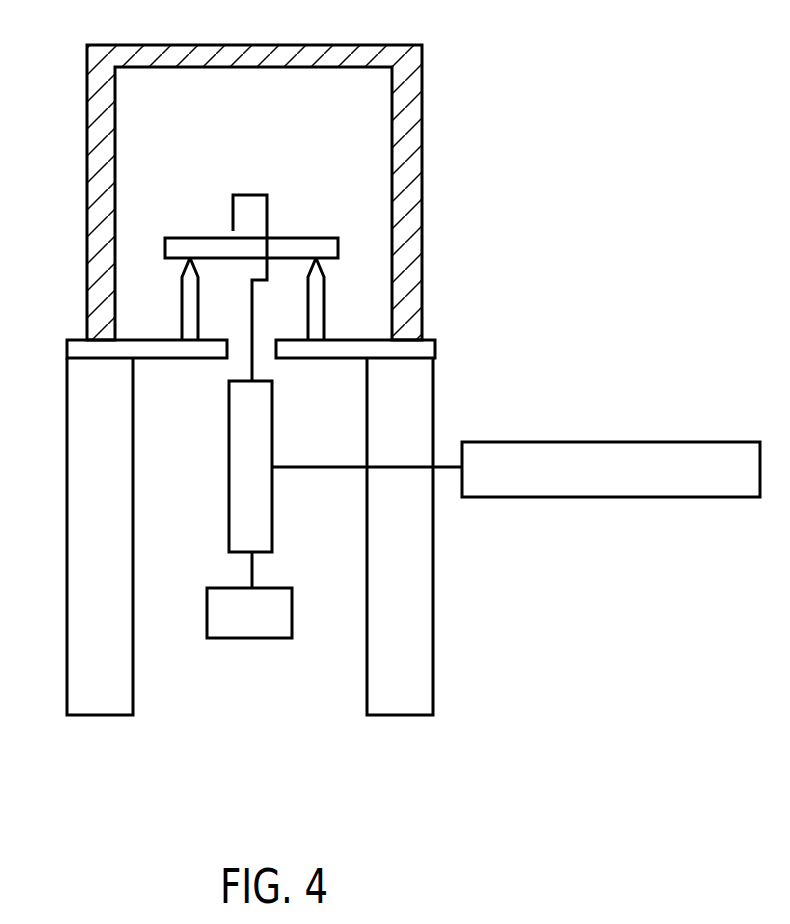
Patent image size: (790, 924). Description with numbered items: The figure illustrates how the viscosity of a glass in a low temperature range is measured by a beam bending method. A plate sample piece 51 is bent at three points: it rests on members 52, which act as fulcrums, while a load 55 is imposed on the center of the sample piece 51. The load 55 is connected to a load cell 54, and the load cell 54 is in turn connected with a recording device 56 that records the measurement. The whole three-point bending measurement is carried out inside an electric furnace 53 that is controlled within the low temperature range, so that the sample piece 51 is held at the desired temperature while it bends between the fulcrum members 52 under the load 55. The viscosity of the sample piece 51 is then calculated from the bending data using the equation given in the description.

The plate sample piece 51 is at (290, 243).
The members 52 is at (188, 305).
The electric furnace 53 is at (404, 224).
The load cell 54 is at (272, 408).
The load 55 is at (283, 619).
The recording device 56 is at (553, 442).